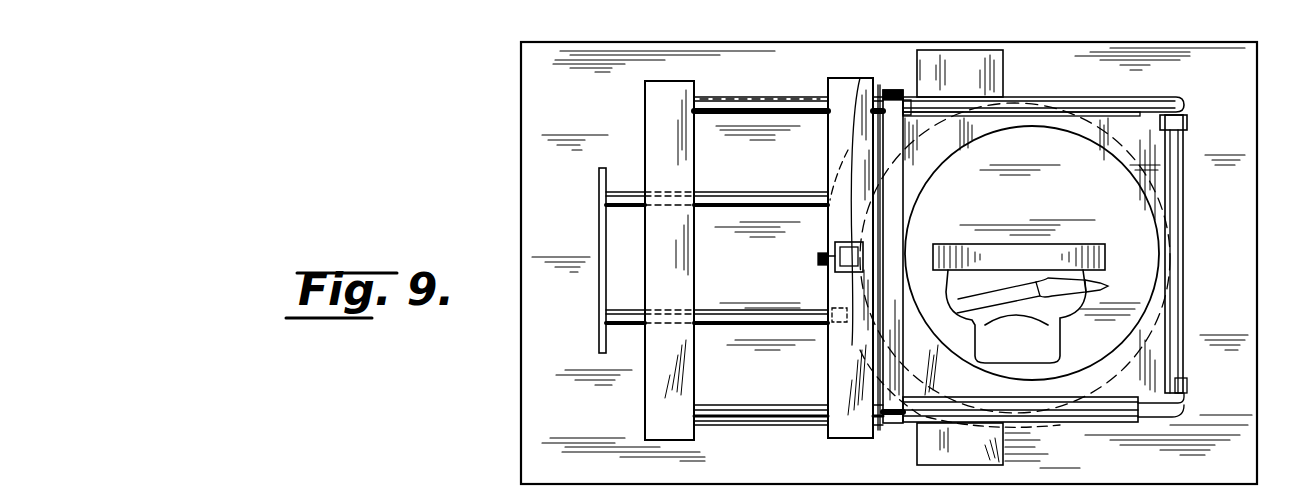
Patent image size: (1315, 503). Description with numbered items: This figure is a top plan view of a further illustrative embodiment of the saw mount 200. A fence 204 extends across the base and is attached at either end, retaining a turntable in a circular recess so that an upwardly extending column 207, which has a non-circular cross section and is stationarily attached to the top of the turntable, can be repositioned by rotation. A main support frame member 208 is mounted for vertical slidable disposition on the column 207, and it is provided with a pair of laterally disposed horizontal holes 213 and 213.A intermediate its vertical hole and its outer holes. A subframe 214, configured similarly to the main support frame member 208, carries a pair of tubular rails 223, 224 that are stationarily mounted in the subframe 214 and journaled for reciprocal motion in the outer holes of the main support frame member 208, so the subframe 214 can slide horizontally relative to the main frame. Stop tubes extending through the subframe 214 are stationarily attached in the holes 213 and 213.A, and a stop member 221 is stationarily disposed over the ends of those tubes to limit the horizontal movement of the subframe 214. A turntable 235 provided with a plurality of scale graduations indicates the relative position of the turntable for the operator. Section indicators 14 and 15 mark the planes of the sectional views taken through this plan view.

The saw mount 200 is at (1241, 93).
The fence 204 is at (1003, 70).
The column 207 is at (873, 78).
The main support frame member 208 is at (855, 78).
The horizontal hole 213 is at (827, 192).
The horizontal hole 213.A is at (830, 335).
The subframe 214 is at (645, 402).
The stop member 221 is at (599, 327).
The tubular rail 223 is at (727, 97).
The tubular rail 224 is at (742, 424).
The turntable 235 is at (1105, 212).
The section line 14- 14 is at (540, 260).
The section line 15- 15 is at (852, 502).